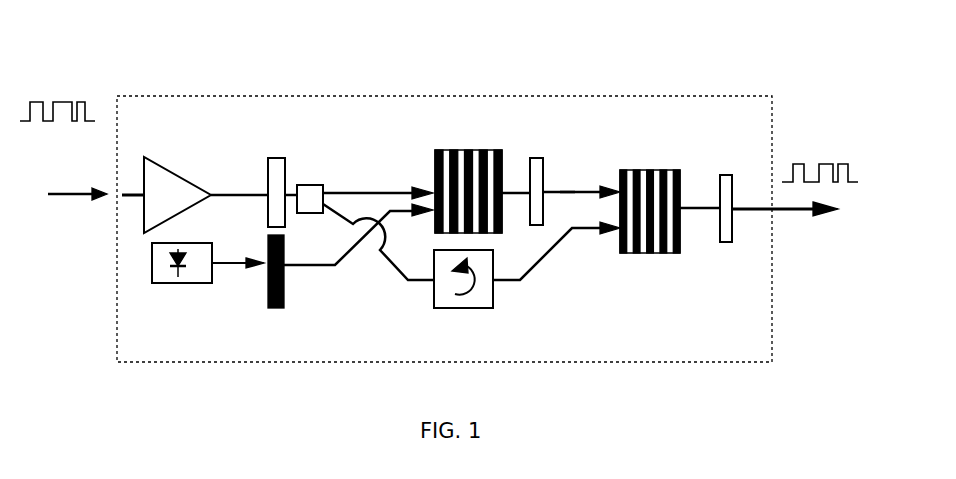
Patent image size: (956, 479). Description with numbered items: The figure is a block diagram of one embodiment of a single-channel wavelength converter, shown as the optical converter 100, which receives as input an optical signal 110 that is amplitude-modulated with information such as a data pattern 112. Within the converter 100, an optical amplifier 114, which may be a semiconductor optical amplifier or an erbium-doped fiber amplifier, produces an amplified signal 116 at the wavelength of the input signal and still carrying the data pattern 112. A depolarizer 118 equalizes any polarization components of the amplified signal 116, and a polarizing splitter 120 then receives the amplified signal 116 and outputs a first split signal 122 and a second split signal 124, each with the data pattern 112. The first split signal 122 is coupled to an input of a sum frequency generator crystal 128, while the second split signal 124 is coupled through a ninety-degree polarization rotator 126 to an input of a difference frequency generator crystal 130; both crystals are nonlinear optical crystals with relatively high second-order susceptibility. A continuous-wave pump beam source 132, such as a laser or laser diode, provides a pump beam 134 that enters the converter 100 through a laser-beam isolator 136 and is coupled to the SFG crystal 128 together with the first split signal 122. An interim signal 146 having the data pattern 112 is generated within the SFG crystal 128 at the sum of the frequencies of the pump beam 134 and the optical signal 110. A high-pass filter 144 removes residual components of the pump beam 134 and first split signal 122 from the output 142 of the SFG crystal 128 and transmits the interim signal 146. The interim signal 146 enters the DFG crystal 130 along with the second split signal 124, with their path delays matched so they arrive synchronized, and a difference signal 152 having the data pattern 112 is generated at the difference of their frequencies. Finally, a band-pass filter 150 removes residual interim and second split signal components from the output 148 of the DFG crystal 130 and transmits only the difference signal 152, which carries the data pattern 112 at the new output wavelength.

The optical converter 100 is at (528, 91).
The optical signal 110 is at (104, 188).
The data pattern 112 is at (439, 126).
The optical amplifier 114 is at (176, 168).
The amplified signal 116 is at (233, 188).
The depolarizer 118 is at (290, 160).
The polarizing splitter 120 is at (300, 183).
The first split signal 122 is at (390, 190).
The second split signal 124 is at (395, 270).
The 90-degree polarization rotator 126 is at (450, 310).
The sum frequency generator crystal 128 is at (450, 150).
The difference frequency generator crystal 130 is at (624, 170).
The pump beam source 132 is at (192, 285).
The pump beam 134 is at (228, 268).
The laser-beam isolator 136 is at (272, 308).
The output of SFG crystal 142 is at (517, 188).
The high-pass filter 144 is at (538, 157).
The interim signal 146 is at (560, 190).
The output of DFG crystal 148 is at (697, 206).
The band-pass filter 150 is at (722, 176).
The difference signal 152 is at (793, 211).